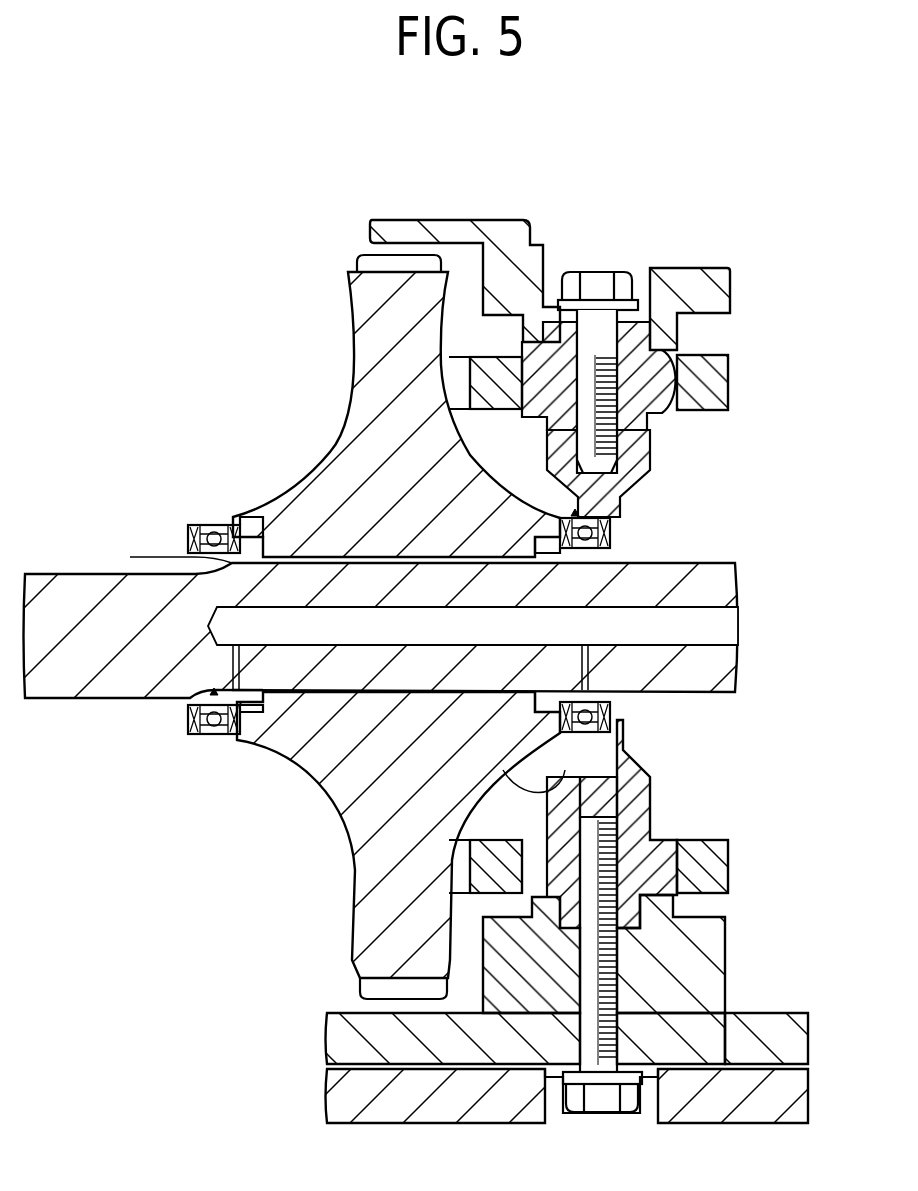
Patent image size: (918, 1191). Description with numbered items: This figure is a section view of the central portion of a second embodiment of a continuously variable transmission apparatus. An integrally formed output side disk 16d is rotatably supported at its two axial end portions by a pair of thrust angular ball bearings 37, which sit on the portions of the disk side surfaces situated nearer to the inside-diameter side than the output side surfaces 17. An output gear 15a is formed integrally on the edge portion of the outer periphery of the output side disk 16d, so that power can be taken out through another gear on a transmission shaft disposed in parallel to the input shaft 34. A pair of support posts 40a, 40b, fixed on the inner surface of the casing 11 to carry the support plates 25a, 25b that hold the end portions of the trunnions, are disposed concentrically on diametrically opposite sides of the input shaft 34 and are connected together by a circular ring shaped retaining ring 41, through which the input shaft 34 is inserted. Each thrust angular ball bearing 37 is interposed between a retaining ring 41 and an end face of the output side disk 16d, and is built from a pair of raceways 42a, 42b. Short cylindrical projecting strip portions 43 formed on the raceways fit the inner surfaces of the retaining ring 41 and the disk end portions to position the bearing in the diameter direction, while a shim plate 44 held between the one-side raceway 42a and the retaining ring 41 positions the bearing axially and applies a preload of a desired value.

The casing 11 is at (510, 240).
The output gear 15a is at (393, 975).
The output side disk 16d is at (388, 361).
The output side surface 17 is at (305, 470).
The support plate 25a is at (712, 380).
The support plate 25b is at (712, 858).
The input shaft 34 is at (63, 683).
The thrust angular ball bearing 37 is at (213, 690).
The support post 40a is at (650, 362).
The support post 40b is at (637, 800).
The retaining ring 41 is at (608, 535).
The raceway 42a is at (597, 552).
The raceway 42b is at (570, 552).
The projecting strip portion 43 is at (233, 520).
The shim plate 44 is at (612, 528).